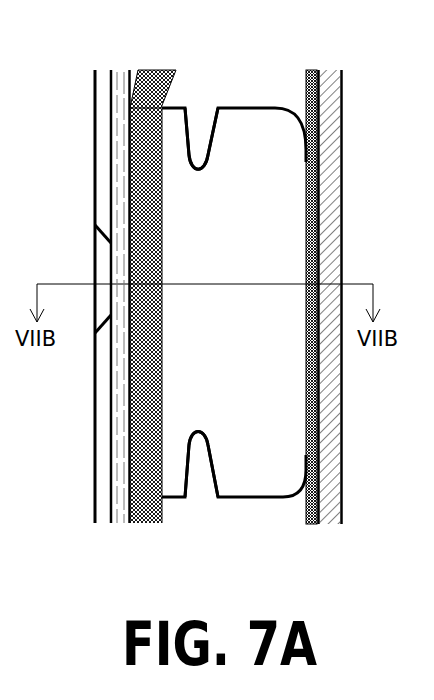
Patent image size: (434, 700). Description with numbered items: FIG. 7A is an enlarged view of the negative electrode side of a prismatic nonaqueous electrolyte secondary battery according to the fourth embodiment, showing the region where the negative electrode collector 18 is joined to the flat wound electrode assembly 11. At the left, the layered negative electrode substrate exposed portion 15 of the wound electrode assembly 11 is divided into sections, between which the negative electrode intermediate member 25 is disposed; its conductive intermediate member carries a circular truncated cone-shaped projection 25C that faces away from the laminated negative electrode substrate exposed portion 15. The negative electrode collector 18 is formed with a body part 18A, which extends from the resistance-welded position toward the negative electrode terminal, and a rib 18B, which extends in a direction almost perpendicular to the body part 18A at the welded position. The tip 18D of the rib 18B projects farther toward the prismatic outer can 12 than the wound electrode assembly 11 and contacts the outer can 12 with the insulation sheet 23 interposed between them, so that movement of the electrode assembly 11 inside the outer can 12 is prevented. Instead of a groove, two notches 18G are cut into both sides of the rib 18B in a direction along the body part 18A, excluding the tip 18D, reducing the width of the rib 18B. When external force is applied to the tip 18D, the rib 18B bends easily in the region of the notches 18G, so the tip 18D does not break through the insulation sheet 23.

The flat wound electrode assembly 11 is at (272, 507).
The prismatic outer can 12 is at (327, 462).
The negative electrode substrate exposed portion 15 is at (119, 72).
The negative electrode collector 18 is at (128, 157).
The body part 18A is at (139, 128).
The rib 18B is at (265, 123).
The tip of the rib 18D is at (318, 192).
The notch 18G is at (198, 165).
The insulation sheet 23 is at (312, 505).
The negative electrode intermediate member 25 is at (85, 473).
The projection 25C is at (101, 250).